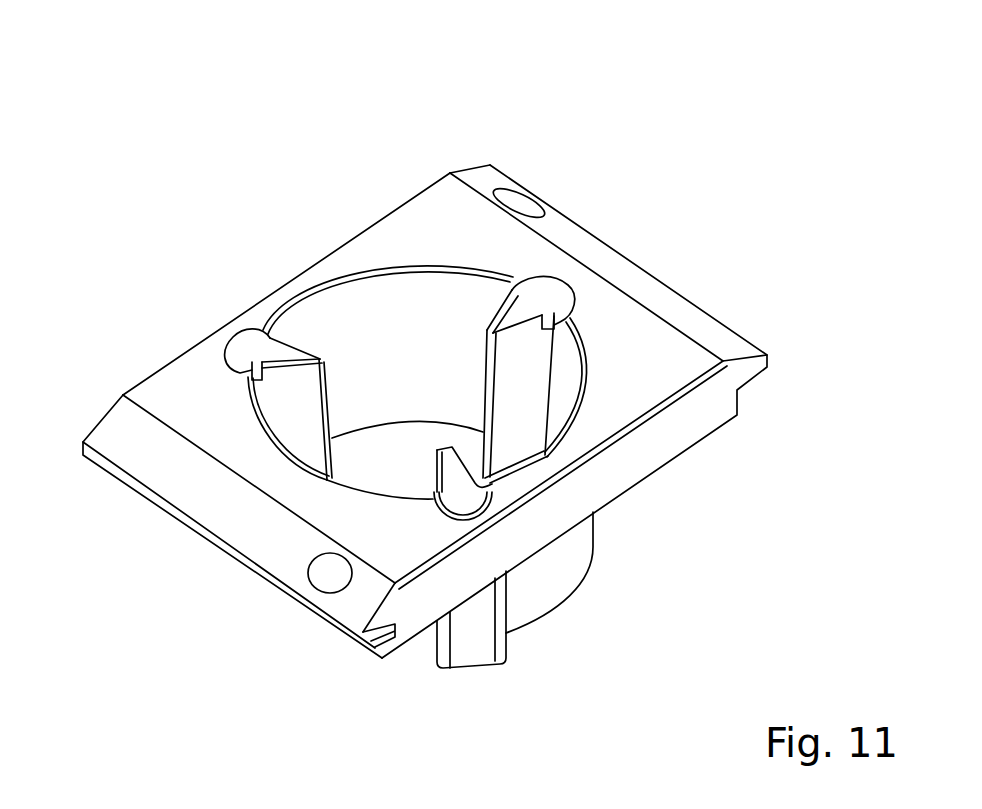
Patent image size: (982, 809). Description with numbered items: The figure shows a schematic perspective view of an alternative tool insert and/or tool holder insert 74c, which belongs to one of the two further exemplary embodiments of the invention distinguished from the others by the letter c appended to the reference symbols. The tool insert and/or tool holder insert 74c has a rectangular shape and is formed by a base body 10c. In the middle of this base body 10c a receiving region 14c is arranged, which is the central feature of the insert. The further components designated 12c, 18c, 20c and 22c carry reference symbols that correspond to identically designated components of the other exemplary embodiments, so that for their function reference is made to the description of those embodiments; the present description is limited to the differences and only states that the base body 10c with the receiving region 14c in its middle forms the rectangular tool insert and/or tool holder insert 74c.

The base body 10c is at (230, 507).
The receptacle 12c is at (380, 342).
The receiving region 14c is at (417, 310).
The retaining tab 18c is at (245, 352).
The retaining tab 20c is at (548, 300).
The retaining tab 22c is at (470, 502).
The tool insert and/or tool holder insert 74c is at (459, 164).